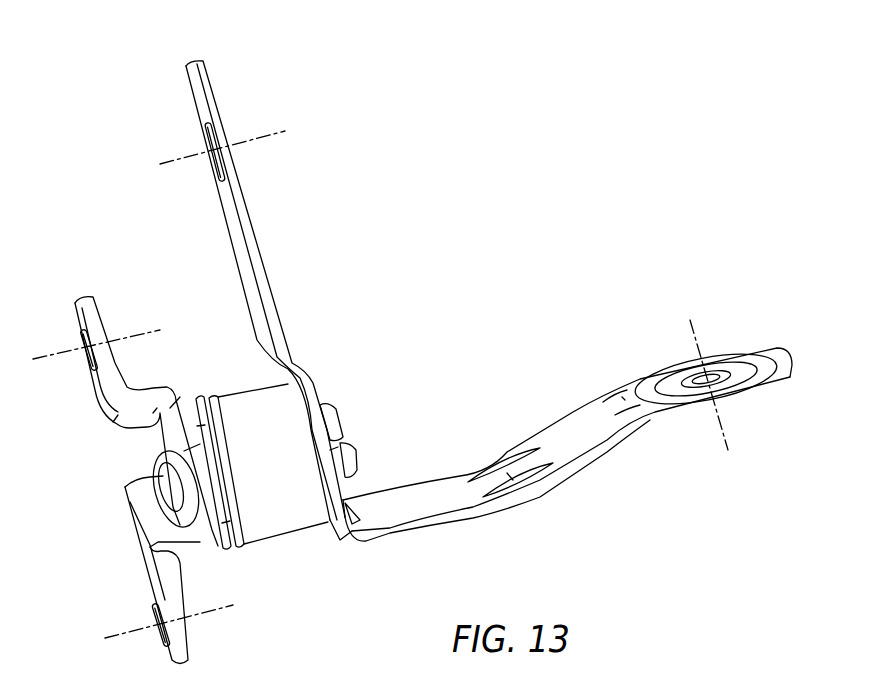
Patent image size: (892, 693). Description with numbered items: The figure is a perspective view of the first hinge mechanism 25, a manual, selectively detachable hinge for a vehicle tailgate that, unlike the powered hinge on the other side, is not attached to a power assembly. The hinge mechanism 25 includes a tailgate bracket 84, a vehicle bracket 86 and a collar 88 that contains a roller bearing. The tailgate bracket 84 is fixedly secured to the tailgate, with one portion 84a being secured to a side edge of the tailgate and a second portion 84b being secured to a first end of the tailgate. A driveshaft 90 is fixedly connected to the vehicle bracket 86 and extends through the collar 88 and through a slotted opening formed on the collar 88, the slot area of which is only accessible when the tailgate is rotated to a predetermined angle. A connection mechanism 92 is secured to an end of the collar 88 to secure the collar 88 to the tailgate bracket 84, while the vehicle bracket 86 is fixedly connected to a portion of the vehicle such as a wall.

The first hinge mechanism 25 is at (551, 187).
The tailgate bracket 84 is at (272, 248).
The one portion of tailgate bracket 84a is at (227, 110).
The second portion of tailgate bracket 84b is at (580, 422).
The vehicle bracket 86 is at (93, 406).
The collar 88 is at (282, 533).
The driveshaft 90 is at (190, 530).
The connection mechanism 92 is at (343, 428).